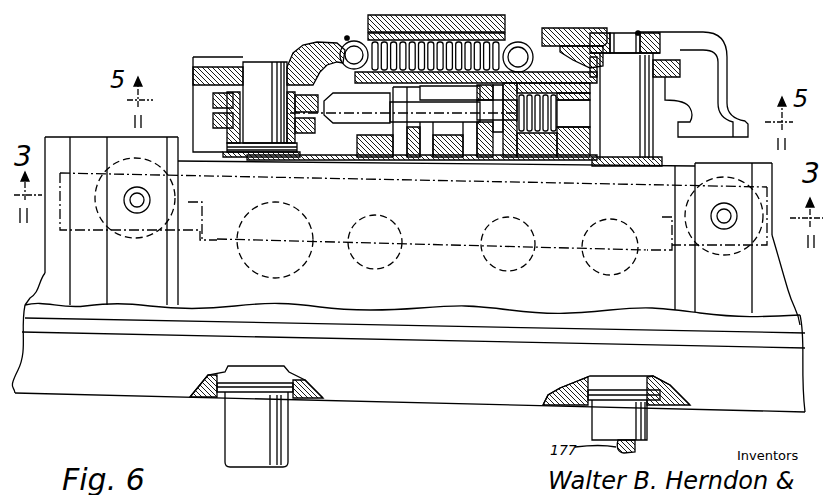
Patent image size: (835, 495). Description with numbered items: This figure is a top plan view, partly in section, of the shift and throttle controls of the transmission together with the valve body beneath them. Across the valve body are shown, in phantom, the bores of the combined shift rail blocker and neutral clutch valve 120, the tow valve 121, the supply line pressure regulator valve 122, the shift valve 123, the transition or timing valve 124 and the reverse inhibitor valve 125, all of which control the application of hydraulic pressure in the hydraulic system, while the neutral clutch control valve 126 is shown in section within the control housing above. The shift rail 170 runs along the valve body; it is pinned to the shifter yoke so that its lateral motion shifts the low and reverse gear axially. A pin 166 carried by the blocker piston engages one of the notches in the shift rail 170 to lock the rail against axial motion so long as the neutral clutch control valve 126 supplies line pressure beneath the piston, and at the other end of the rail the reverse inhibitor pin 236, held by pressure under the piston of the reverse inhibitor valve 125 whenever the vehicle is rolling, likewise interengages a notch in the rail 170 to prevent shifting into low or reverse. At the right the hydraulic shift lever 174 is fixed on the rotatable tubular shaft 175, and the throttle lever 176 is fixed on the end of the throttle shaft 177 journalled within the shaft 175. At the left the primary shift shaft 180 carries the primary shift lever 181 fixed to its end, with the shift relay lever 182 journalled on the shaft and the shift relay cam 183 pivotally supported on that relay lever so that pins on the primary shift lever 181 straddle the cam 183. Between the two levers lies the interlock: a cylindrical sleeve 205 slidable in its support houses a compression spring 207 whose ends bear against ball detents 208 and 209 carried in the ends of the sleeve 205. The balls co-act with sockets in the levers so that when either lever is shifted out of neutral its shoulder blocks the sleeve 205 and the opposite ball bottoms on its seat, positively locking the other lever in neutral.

The combined shift rail blocker and neutral clutch valve 120 is at (120, 158).
The tow valve 121 is at (261, 276).
The supply line pressure regulator valve 122 is at (393, 263).
The shift valve 123 is at (502, 271).
The transition or timing valve 124 is at (589, 233).
The reverse inhibitor valve 125 is at (718, 177).
The neutral clutch control valve 126 is at (457, 108).
The pin 166 is at (137, 205).
The shift rail 170 is at (482, 241).
The hydraulic shift lever 174 is at (557, 50).
The rotatable tubular shaft 175 is at (628, 135).
The throttle lever 176 is at (719, 50).
The throttle shaft 177 is at (639, 32).
The primary shift shaft 180 is at (260, 80).
The primary shift lever 181 is at (217, 67).
The shift relay lever 182 is at (213, 121).
The shift relay cam 183 is at (213, 100).
The cylindrical sleeve 205 is at (347, 37).
The compression spring 207 is at (420, 53).
The ball detent 208 is at (354, 50).
The ball detent 209 is at (518, 52).
The reverse inhibitor pin 236 is at (723, 222).